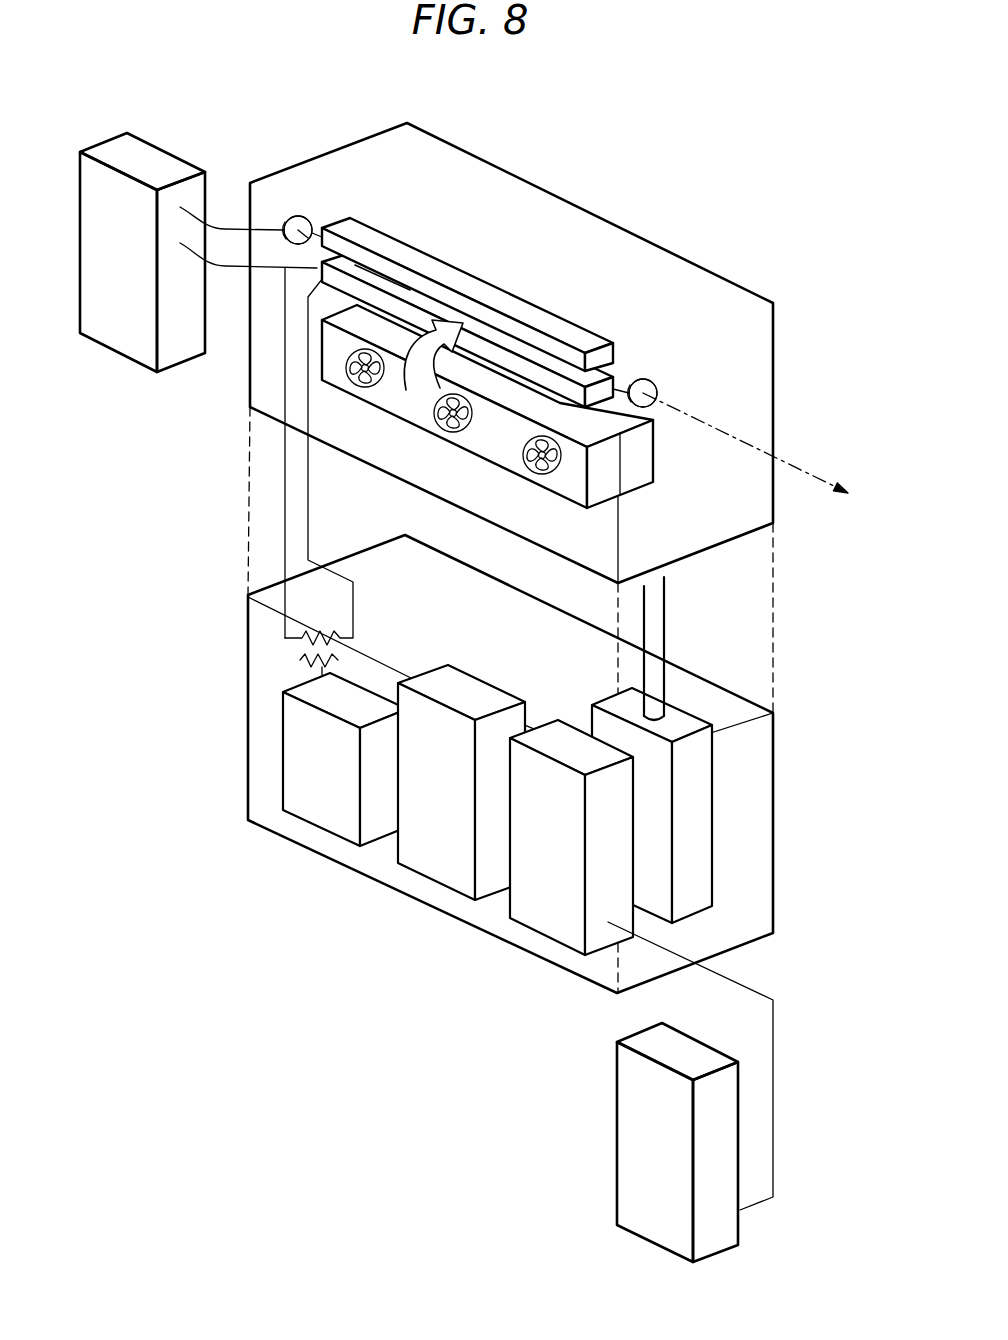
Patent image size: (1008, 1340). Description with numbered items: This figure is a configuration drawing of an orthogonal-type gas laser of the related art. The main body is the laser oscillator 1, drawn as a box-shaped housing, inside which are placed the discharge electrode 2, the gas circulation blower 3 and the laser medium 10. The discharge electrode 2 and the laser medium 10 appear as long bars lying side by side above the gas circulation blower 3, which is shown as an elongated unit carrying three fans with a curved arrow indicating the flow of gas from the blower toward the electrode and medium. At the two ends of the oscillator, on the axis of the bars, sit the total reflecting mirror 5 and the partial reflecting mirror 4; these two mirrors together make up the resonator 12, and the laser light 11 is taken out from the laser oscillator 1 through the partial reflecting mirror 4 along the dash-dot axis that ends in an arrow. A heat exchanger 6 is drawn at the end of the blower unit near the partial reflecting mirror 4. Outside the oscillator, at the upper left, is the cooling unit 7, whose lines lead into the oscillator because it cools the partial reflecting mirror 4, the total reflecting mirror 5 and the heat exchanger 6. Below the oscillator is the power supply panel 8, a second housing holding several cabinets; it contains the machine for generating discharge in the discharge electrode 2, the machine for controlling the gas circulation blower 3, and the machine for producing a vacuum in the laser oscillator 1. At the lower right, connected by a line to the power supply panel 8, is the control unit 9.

The laser oscillator 1 is at (773, 377).
The discharge electrode 2 is at (577, 337).
The gas circulation blower 3 is at (517, 457).
The partial reflecting mirror 4 is at (662, 389).
The total reflecting mirror 5 is at (296, 216).
The heat exchanger 6 is at (638, 474).
The cooling unit 7 is at (112, 144).
The power supply panel 8 is at (488, 920).
The control unit 9 is at (622, 1137).
The laser medium 10 is at (490, 353).
The laser light 11 is at (805, 467).
The resonator 12 is at (310, 210).